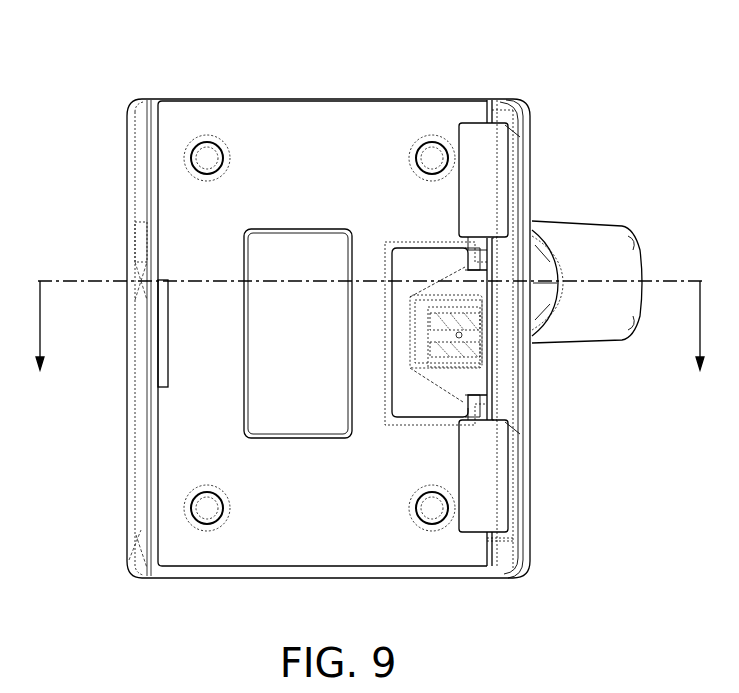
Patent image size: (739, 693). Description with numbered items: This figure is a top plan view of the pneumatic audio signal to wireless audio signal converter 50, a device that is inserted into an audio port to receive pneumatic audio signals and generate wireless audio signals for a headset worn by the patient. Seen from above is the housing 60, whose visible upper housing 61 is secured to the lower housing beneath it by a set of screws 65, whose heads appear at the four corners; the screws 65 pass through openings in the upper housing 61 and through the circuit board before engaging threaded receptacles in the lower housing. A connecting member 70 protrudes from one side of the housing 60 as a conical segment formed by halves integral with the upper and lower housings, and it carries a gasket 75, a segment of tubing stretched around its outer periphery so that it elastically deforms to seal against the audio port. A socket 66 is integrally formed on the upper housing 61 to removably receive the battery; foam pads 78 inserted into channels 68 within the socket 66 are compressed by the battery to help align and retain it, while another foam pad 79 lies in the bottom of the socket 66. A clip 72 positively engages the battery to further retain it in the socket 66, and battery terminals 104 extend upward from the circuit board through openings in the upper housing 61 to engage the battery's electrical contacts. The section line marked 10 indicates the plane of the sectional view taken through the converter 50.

The section line 10- 10 is at (371, 344).
The pneumatic audio signal to wireless audio signal converter 50 is at (520, 72).
The housing 60 is at (532, 494).
The upper housing 61 is at (302, 534).
The screws 65 is at (415, 157).
The socket 66 is at (211, 116).
The channels 68 is at (508, 134).
The connecting member 70 is at (586, 213).
The clip 72 is at (168, 315).
The gasket 75 is at (572, 311).
The foam pads 78 is at (466, 212).
The foam pad 79 is at (275, 347).
The battery terminals 104 is at (480, 320).